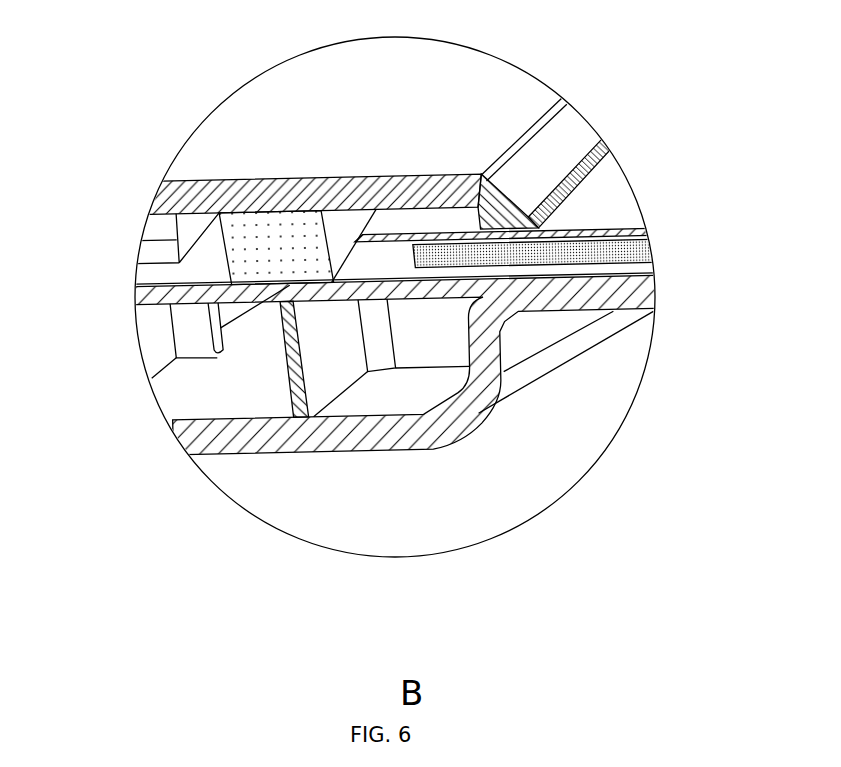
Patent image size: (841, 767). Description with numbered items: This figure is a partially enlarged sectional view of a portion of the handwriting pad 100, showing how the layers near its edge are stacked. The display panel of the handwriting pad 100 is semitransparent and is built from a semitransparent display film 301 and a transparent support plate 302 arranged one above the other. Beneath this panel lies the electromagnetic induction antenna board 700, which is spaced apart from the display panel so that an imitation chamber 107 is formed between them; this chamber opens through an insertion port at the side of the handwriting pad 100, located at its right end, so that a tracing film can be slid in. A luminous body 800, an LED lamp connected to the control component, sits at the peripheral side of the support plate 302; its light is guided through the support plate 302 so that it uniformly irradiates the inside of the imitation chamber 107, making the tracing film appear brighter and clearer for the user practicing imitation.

The handwriting pad 100 is at (283, 134).
The imitation chamber 107 is at (527, 205).
The display film 301 is at (607, 202).
The support plate 302 is at (593, 250).
The electromagnetic induction antenna board 700 is at (396, 272).
The luminous body 800 is at (253, 247).